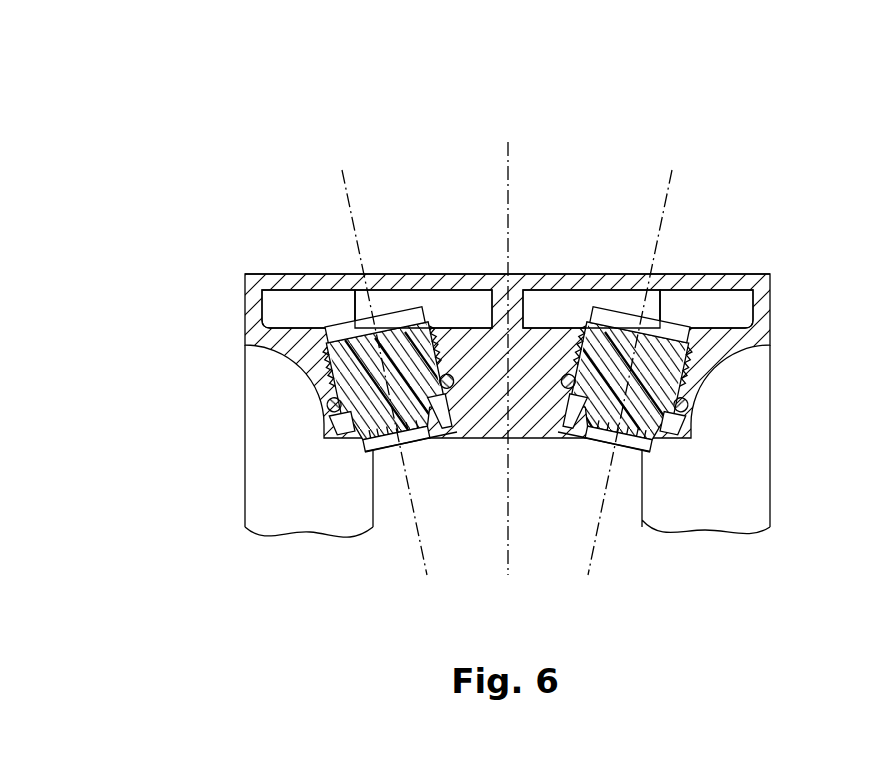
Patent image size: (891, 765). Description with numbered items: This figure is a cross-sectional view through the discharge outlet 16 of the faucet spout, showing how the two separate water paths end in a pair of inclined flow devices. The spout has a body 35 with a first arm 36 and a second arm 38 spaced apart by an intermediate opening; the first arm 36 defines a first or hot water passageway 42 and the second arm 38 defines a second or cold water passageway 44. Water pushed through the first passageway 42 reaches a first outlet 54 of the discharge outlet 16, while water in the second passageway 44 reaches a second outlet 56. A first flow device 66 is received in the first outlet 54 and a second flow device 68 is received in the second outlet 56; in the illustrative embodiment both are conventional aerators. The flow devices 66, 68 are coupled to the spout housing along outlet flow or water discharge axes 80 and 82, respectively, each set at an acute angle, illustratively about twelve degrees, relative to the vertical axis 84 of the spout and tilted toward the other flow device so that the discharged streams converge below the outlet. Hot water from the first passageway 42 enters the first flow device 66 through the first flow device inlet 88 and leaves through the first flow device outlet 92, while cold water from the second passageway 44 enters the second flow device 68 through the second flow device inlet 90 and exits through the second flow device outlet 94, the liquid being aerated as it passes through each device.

The discharge outlet 16 is at (720, 407).
The body 35 is at (762, 273).
The first arm 36 is at (265, 488).
The second arm 38 is at (755, 505).
The first passageway 42 is at (272, 307).
The second passageway 44 is at (743, 307).
The first outlet 54 is at (408, 322).
The second outlet 56 is at (607, 322).
The first flow device 66 is at (431, 478).
The second flow device 68 is at (584, 478).
The first outlet flow axis 80 is at (348, 183).
The second outlet flow axis 82 is at (668, 183).
The vertical axis 84 is at (504, 177).
The first flow device inlet 88 is at (332, 307).
The second flow device inlet 90 is at (683, 307).
The first flow device outlet 92 is at (388, 468).
The second flow device outlet 94 is at (627, 468).